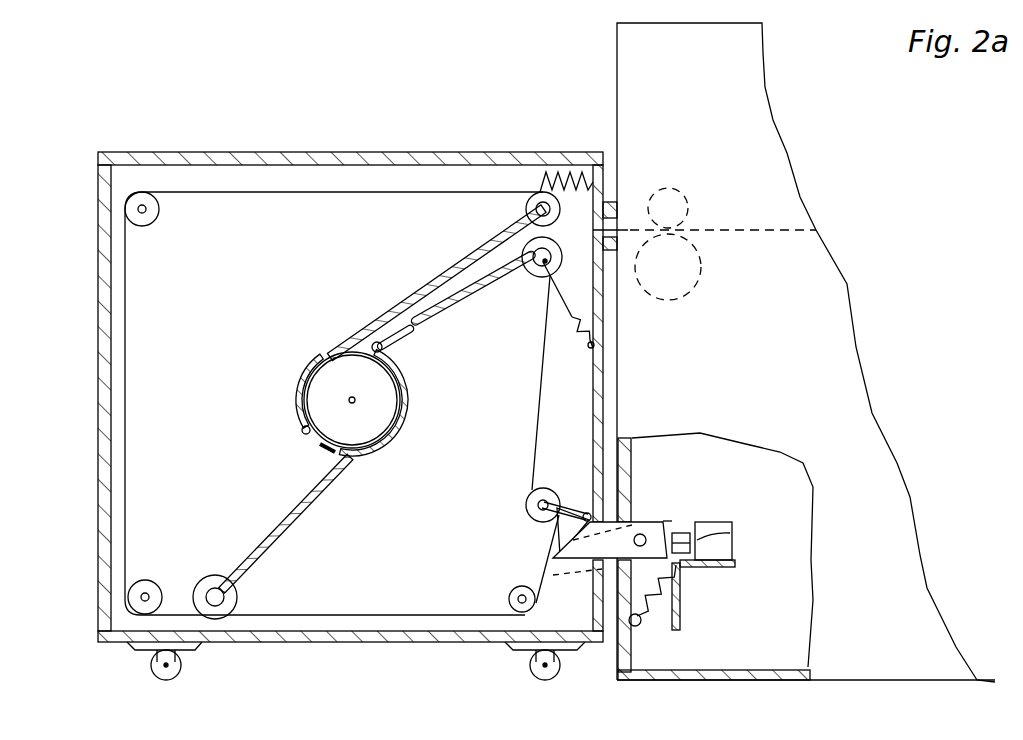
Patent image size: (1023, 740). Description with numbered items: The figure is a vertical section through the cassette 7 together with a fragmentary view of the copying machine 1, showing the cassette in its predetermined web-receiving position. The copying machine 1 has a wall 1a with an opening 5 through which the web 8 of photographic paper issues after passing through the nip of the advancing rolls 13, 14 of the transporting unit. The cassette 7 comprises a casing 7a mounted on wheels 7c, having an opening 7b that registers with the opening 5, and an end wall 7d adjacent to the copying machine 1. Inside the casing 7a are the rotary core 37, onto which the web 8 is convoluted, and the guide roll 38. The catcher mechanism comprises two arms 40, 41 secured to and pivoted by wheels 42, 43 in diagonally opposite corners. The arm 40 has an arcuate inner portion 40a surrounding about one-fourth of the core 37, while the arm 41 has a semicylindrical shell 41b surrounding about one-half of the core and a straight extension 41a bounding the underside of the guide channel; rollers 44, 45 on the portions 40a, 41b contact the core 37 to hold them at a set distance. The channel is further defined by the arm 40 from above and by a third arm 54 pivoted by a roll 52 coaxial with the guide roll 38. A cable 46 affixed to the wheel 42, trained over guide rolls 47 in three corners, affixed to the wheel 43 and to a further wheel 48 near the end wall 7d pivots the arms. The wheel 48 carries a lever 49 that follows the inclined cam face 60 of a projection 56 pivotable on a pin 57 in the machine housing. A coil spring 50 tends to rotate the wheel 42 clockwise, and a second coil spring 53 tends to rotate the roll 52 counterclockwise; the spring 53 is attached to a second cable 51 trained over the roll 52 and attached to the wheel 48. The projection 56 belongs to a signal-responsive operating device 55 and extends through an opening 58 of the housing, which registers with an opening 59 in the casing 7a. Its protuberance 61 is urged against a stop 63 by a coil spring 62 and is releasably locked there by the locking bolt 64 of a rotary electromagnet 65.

The copying machine 1 is at (638, 133).
The wall 1a is at (617, 652).
The opening 5 is at (617, 228).
The cassette 7 is at (333, 148).
The casing 7a is at (465, 152).
The opening 7b is at (554, 257).
The wheels 7c is at (182, 666).
The end wall 7d is at (604, 377).
The web 8 is at (570, 230).
The lower advancing roll 13 is at (697, 280).
The advancing roll 14 is at (690, 208).
The core 37 is at (338, 378).
The guide roll 38 is at (530, 273).
The arm 40 is at (405, 298).
The arcuate inner portion 40a is at (298, 368).
The arm 41 is at (345, 482).
The straight extension 41a is at (415, 335).
The semicylindrical inner portion 41b is at (405, 447).
The wheel 42 is at (527, 205).
The wheel 43 is at (215, 586).
The roller 44 is at (304, 436).
The roller 45 is at (385, 353).
The cable 46 is at (340, 191).
The guide rolls 47 is at (160, 212).
The wheel 48 is at (530, 497).
The lever 49 is at (578, 512).
The coil spring 50 is at (560, 178).
The cable 51 is at (537, 385).
The roll 52 is at (550, 272).
The coil spring 53 is at (578, 345).
The third arm 54 is at (452, 305).
The operating device 55 is at (662, 512).
The projection 56 is at (640, 520).
The pin 57 is at (665, 520).
The opening 58 is at (680, 580).
The opening 59 is at (588, 575).
The cam face 60 is at (548, 533).
The protuberance 61 is at (690, 530).
The coil spring 62 is at (668, 615).
The stop 63 is at (700, 570).
The locking bolt 64 is at (725, 525).
The rotary electromagnet 65 is at (728, 545).